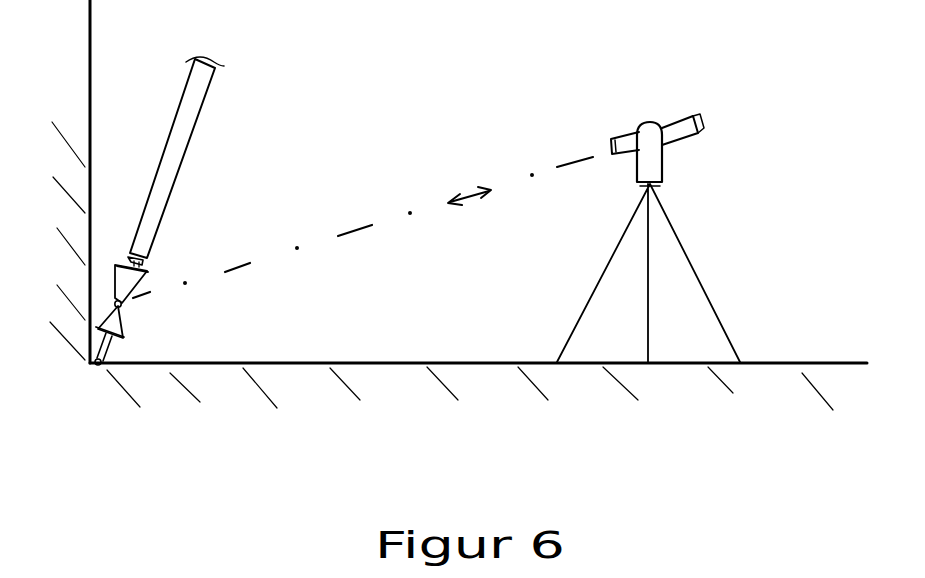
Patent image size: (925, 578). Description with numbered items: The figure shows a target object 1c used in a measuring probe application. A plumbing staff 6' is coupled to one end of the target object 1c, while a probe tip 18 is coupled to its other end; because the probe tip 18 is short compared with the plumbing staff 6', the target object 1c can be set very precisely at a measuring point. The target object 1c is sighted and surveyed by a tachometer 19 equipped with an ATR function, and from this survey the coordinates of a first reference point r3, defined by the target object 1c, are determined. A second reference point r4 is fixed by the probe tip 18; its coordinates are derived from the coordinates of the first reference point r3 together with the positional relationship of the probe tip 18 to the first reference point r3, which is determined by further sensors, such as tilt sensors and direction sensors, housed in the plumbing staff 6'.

The plumbing staff 6' is at (212, 157).
The target object 1c is at (197, 252).
The first reference point r3 is at (121, 305).
The second reference point r4 is at (98, 365).
The probe tip 18 is at (103, 354).
The tachometer 19 is at (687, 88).